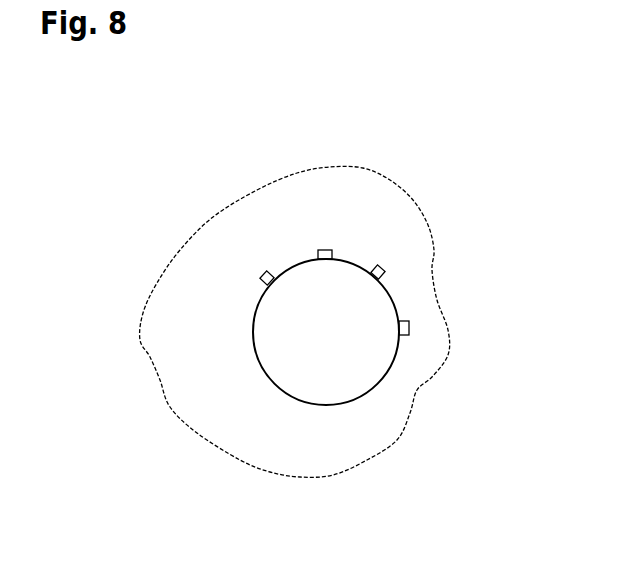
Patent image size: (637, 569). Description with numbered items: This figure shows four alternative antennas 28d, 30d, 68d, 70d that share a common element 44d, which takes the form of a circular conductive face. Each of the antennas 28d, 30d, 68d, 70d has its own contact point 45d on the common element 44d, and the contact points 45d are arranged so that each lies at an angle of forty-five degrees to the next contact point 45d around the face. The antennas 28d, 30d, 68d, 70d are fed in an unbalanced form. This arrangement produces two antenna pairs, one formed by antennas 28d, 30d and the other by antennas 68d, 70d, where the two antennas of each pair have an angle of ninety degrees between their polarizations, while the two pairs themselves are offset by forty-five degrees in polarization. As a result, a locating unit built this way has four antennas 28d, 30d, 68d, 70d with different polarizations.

The common element 44d is at (375, 437).
The antenna 28d is at (246, 240).
The contact point 45d is at (263, 277).
The antenna 68d is at (322, 210).
The antenna 30d is at (425, 260).
The antenna 70d is at (425, 364).